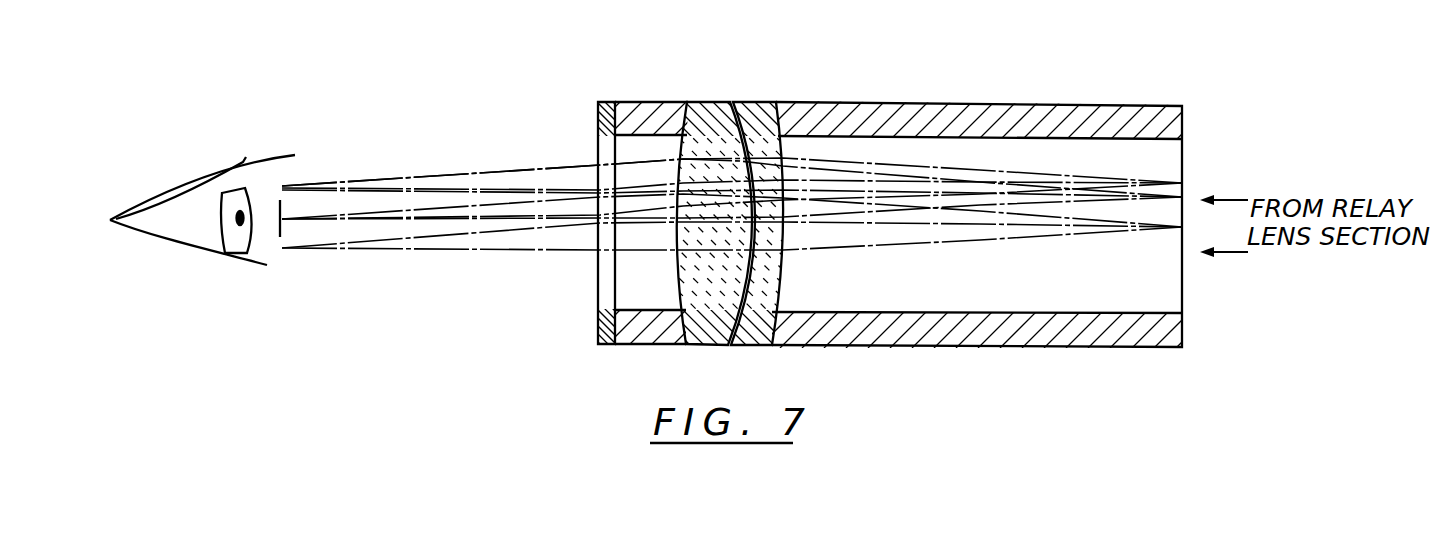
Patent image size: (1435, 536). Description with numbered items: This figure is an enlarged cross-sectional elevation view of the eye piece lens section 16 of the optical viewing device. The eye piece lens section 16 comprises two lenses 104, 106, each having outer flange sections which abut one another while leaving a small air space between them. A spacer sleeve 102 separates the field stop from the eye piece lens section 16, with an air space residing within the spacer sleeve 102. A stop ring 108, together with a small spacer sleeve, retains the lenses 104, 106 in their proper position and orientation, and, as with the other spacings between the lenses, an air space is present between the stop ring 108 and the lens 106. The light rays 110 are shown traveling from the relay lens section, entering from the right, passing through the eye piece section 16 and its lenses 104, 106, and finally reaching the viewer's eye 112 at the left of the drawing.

The eye piece lens section 16 is at (816, 182).
The spacer sleeve 102 is at (913, 107).
The lens 104 is at (760, 102).
The lens 106 is at (713, 102).
The stop ring 108 is at (596, 118).
The light rays 110 is at (993, 166).
The viewer's eye 112 is at (200, 177).